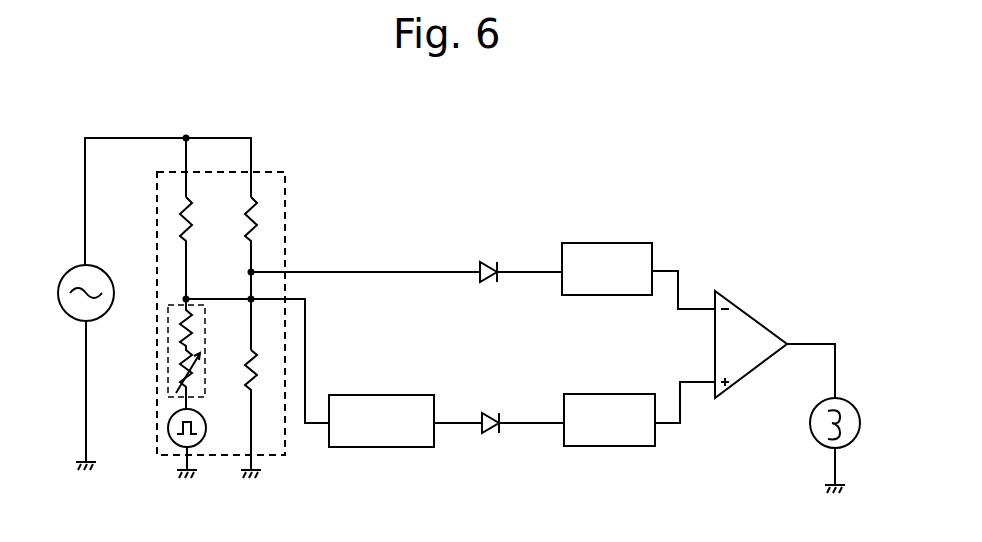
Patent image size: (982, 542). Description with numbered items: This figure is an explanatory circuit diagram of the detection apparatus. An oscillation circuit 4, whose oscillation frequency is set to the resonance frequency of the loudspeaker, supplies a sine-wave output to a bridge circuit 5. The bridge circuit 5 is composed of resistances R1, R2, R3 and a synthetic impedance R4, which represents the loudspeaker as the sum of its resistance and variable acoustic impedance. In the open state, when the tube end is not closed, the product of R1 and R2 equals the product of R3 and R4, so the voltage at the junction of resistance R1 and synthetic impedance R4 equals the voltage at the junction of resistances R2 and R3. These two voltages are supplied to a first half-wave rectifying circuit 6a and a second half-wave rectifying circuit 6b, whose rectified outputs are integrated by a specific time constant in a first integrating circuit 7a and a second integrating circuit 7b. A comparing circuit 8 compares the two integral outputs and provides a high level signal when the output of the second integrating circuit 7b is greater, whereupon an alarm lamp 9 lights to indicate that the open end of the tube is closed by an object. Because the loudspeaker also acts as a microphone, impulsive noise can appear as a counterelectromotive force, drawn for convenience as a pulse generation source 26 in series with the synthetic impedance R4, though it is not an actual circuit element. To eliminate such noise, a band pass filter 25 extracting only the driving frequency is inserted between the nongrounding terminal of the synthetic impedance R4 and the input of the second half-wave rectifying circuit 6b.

The oscillation circuit 4 is at (76, 260).
The bridge circuit 5 is at (229, 172).
The resistance R1 is at (178, 204).
The resistance R2 is at (259, 206).
The resistance R3 is at (258, 365).
The synthetic impedance R4 is at (168, 350).
The pulse generation source 26 is at (202, 440).
The first half-wave rectifying circuit 6a is at (490, 262).
The second half-wave rectifying circuit 6b is at (494, 433).
The first integrating circuit 7a is at (603, 243).
The second integrating circuit 7b is at (605, 446).
The band pass filter 25 is at (371, 395).
The comparing circuit 8 is at (748, 315).
The alarm lamp 9 is at (842, 400).